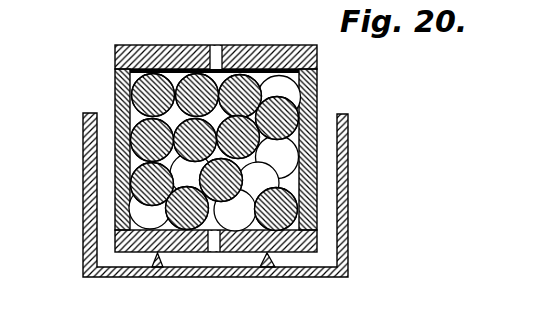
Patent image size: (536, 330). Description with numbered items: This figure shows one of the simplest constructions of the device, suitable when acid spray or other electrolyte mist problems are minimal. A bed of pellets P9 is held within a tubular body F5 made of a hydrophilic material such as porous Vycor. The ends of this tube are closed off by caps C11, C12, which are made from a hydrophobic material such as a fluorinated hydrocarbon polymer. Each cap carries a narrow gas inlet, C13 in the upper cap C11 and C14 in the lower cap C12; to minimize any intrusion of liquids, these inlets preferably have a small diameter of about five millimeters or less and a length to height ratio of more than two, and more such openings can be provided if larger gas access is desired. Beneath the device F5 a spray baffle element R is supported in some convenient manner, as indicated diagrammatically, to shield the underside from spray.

The spray baffle element R is at (349, 184).
The tubular body of hydrophilic material F5 is at (322, 92).
The cap C11 is at (243, 53).
The cap C12 is at (300, 247).
The gas inlet C13 is at (221, 46).
The gas inlet C14 is at (213, 245).
The pellets P9 is at (145, 90).